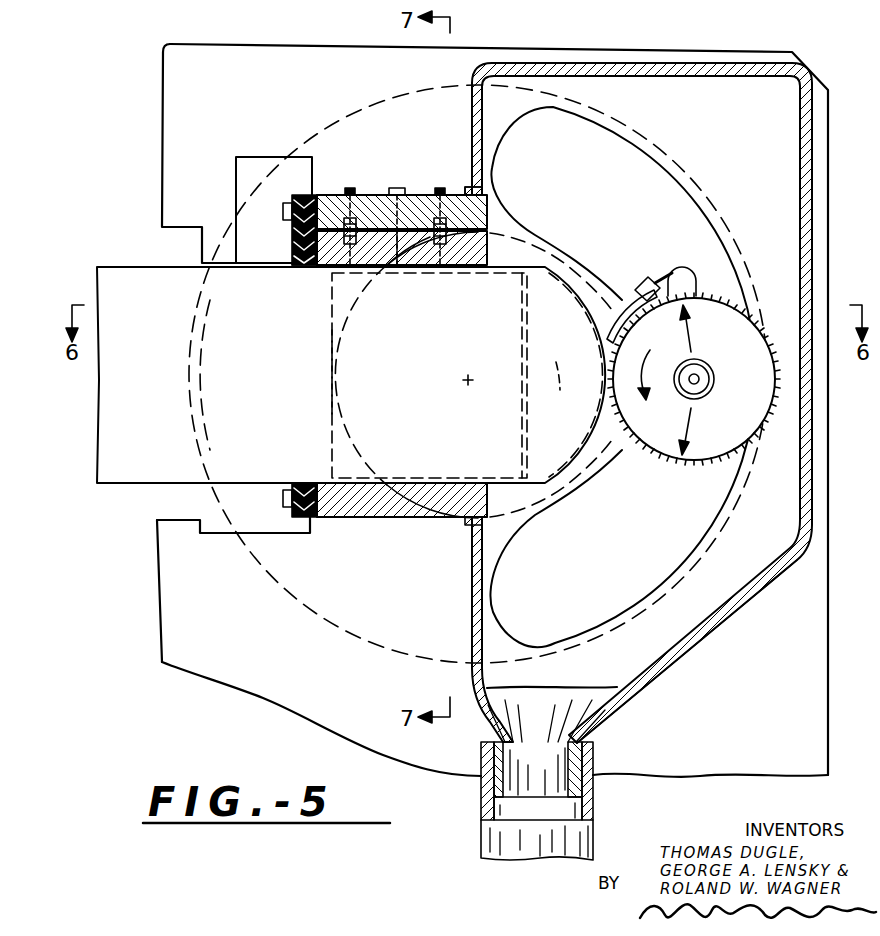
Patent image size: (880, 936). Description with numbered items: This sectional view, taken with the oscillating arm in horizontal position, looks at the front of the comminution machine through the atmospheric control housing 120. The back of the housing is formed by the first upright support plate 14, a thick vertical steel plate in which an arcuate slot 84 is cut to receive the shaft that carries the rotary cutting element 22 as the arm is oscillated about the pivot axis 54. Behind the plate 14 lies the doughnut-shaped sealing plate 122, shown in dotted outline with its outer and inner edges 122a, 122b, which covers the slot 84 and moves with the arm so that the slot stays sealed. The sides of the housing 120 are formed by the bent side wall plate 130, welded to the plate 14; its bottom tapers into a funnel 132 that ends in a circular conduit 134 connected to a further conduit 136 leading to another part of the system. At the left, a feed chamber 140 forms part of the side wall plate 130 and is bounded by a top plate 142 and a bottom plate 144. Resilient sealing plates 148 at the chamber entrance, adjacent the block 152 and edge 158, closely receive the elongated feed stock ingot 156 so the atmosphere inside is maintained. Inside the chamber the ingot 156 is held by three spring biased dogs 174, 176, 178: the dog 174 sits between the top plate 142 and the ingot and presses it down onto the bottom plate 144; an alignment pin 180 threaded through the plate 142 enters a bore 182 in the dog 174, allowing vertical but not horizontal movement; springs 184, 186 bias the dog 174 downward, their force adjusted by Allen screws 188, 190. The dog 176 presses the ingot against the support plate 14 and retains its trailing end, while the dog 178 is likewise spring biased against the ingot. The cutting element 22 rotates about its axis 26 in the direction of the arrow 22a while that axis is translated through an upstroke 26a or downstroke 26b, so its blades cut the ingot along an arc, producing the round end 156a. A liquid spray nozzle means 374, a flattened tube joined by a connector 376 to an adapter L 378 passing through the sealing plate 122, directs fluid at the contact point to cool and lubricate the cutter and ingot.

The first upright support plate 14 is at (232, 58).
The side wall plate 130 is at (596, 66).
The atmospheric control housing 120 is at (712, 637).
The arcuate slot 84 is at (542, 228).
The doughnut-shaped sealing plate 122 is at (432, 92).
The outer edge of sealing plate 122a is at (193, 381).
The inner edge of sealing plate 122b is at (340, 345).
The support block 152 is at (236, 172).
The feed stock ingot 156 is at (151, 263).
The round end 156a is at (597, 425).
The dog 176 is at (335, 400).
The dog 178 is at (553, 372).
The pivot axis 54 is at (467, 384).
The top plate 142 is at (418, 208).
The bottom plate 144 is at (406, 517).
The feed chamber 140 is at (385, 520).
The resilient sealing plates 148 is at (292, 232).
The seal lower edge 158 is at (300, 266).
The spring 184 is at (320, 268).
The dog 174 is at (386, 266).
The bore 182 is at (398, 266).
The spring 186 is at (440, 266).
The Allen screw 188 is at (356, 170).
The alignment pin 180 is at (400, 170).
The Allen screw 190 is at (470, 187).
The rotary cutting element 22 is at (688, 466).
The direction of rotation arrow 22a is at (650, 352).
The axis of rotation 26 is at (699, 380).
The upstroke arrow 26a is at (699, 338).
The downstroke arrow 26b is at (697, 428).
The liquid spray nozzle means 374 is at (630, 298).
The connector 376 is at (652, 270).
The adapter L 378 is at (690, 273).
The funnel 132 is at (617, 701).
The circular conduit 134 is at (596, 760).
The conduit 136 is at (548, 858).